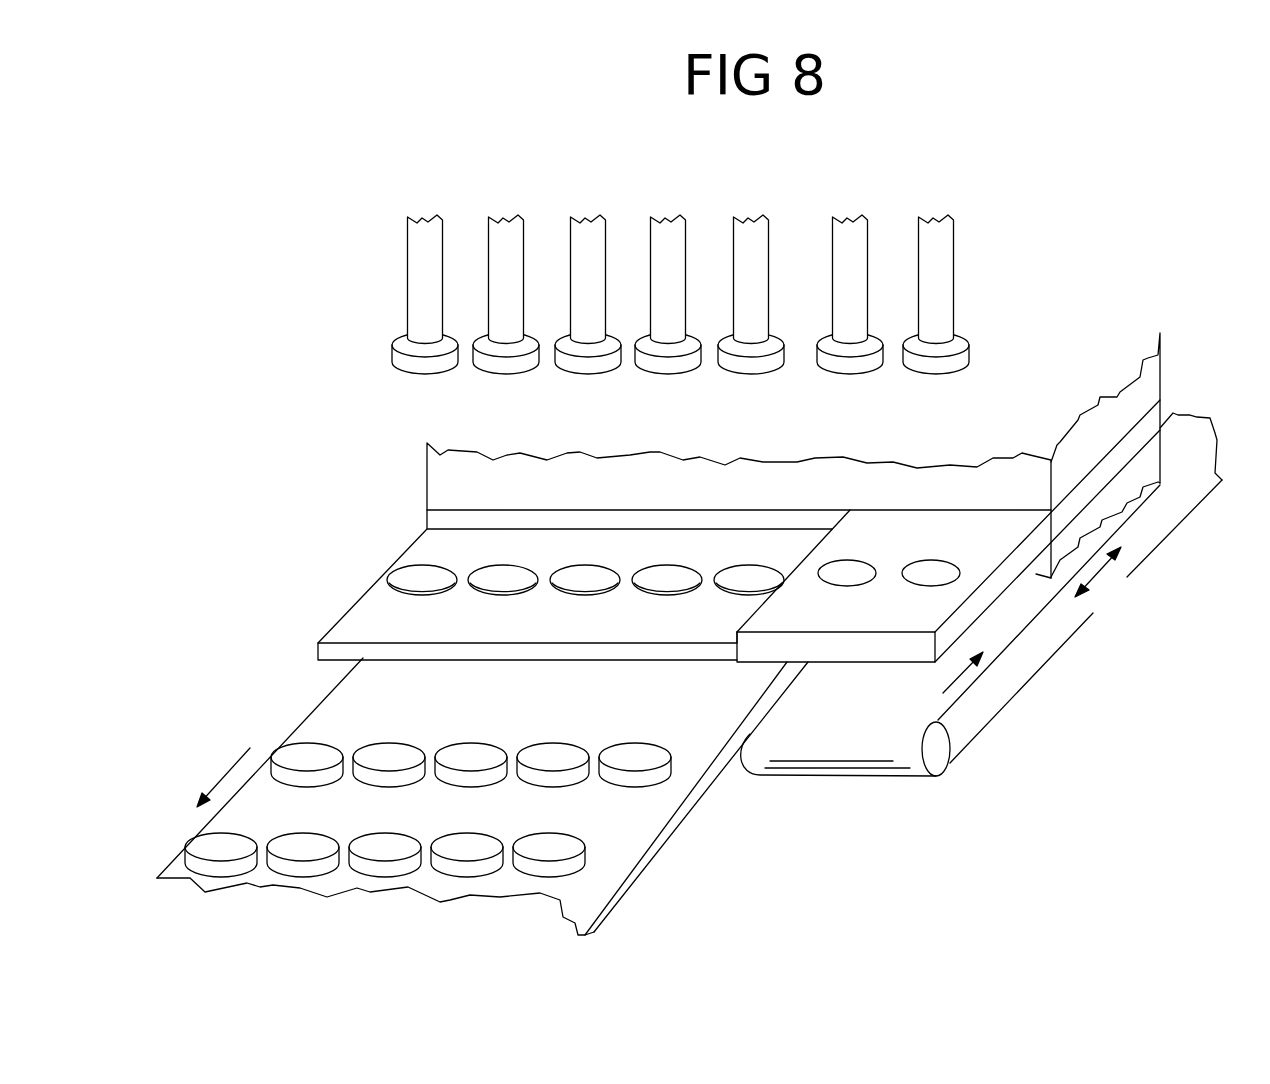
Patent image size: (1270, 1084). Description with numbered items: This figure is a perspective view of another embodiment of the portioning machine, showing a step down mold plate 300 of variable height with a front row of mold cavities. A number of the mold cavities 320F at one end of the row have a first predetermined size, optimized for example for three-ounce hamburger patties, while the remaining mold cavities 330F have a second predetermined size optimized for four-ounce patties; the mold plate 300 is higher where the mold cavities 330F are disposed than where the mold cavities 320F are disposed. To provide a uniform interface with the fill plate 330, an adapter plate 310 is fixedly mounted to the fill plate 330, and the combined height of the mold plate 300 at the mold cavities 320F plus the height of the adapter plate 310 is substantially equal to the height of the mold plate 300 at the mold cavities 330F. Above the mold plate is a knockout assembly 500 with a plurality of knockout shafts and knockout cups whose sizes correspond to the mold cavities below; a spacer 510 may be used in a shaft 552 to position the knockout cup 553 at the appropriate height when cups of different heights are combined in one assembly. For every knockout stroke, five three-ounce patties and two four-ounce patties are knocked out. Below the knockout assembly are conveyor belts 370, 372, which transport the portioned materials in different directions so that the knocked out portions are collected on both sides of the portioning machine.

The knockout assembly 500 is at (686, 301).
The spacer 510 is at (379, 305).
The shaft 552 is at (408, 258).
The knockout cup 553 is at (397, 372).
The mold plate 300 is at (711, 538).
The fill plate 330 is at (427, 471).
The adapter plate 310 is at (684, 615).
The mold cavities of the front row 320F is at (700, 668).
The mold cavities of the front row 330F is at (933, 670).
The conveyor belt 370 is at (297, 728).
The conveyor belt 372 is at (997, 718).